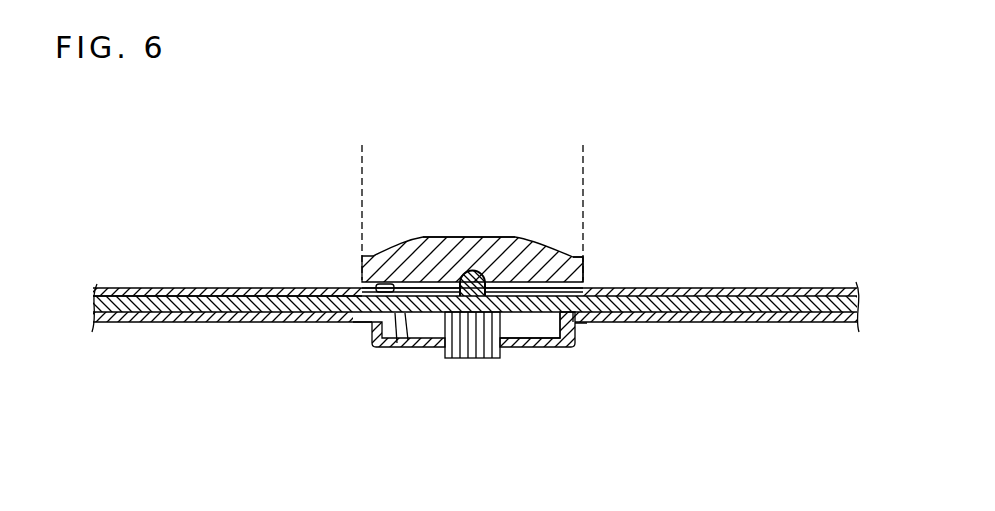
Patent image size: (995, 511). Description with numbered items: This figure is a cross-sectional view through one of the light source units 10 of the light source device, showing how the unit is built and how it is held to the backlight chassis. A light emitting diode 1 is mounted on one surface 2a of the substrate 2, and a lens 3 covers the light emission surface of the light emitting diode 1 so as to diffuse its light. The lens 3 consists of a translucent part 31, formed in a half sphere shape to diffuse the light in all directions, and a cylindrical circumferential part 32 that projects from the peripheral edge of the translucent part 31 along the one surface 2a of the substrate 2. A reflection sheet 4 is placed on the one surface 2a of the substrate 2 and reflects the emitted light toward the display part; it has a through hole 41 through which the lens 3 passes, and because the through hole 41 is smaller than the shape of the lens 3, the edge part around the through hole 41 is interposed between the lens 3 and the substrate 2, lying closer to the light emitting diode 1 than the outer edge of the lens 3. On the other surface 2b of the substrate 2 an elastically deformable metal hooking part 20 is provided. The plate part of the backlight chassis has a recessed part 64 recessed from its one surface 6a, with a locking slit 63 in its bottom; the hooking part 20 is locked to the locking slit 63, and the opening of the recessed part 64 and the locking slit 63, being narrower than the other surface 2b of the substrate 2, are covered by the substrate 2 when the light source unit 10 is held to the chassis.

The light emitting diode 1 is at (465, 268).
The substrate 2 is at (120, 292).
The one surface 2a is at (397, 343).
The other surface 2b is at (408, 340).
The lens 3 is at (498, 232).
The translucent part 31 is at (425, 236).
The circumferential part 32 is at (585, 262).
The reflection sheet 4 is at (212, 287).
The through hole 41 is at (383, 285).
The one surface 6a is at (750, 312).
The light source unit 10 is at (255, 243).
The hooking part 20 is at (482, 362).
The locking slit 63 is at (503, 350).
The recessed part 64 is at (552, 345).